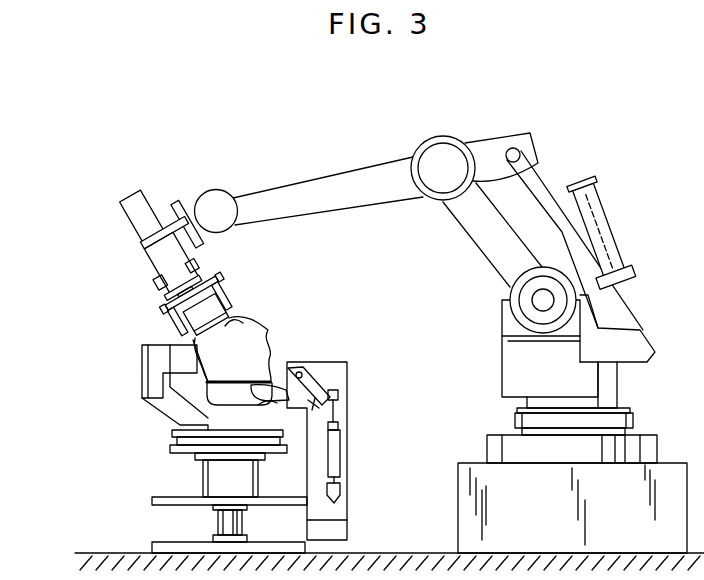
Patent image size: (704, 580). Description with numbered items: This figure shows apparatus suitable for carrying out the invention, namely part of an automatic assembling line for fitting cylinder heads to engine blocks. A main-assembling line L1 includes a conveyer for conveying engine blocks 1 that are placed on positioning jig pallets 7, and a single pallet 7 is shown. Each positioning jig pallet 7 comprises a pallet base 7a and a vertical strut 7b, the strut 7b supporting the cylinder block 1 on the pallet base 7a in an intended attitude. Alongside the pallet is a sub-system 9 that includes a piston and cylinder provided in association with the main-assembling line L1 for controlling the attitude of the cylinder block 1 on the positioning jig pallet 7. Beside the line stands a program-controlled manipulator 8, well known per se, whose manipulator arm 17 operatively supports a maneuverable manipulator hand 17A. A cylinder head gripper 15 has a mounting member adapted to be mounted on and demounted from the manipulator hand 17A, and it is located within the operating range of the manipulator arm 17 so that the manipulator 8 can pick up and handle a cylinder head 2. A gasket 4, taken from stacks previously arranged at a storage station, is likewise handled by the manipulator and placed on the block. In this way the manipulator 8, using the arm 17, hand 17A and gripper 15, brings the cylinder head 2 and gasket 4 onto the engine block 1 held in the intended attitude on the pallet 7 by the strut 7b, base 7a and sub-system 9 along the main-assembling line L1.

The engine block 1 is at (268, 333).
The cylinder head 2 is at (227, 303).
The gasket 4 is at (238, 325).
The positioning jig pallet 7 is at (177, 446).
The pallet base 7a is at (197, 449).
The vertical strut 7b is at (142, 372).
The program-controlled manipulator 8 is at (562, 172).
The sub-system 9 is at (352, 408).
The cylinder head gripper 15 is at (220, 278).
The manipulator arm 17 is at (330, 178).
The manipulator hand 17A is at (170, 268).
The main-assembling line L1 is at (202, 529).